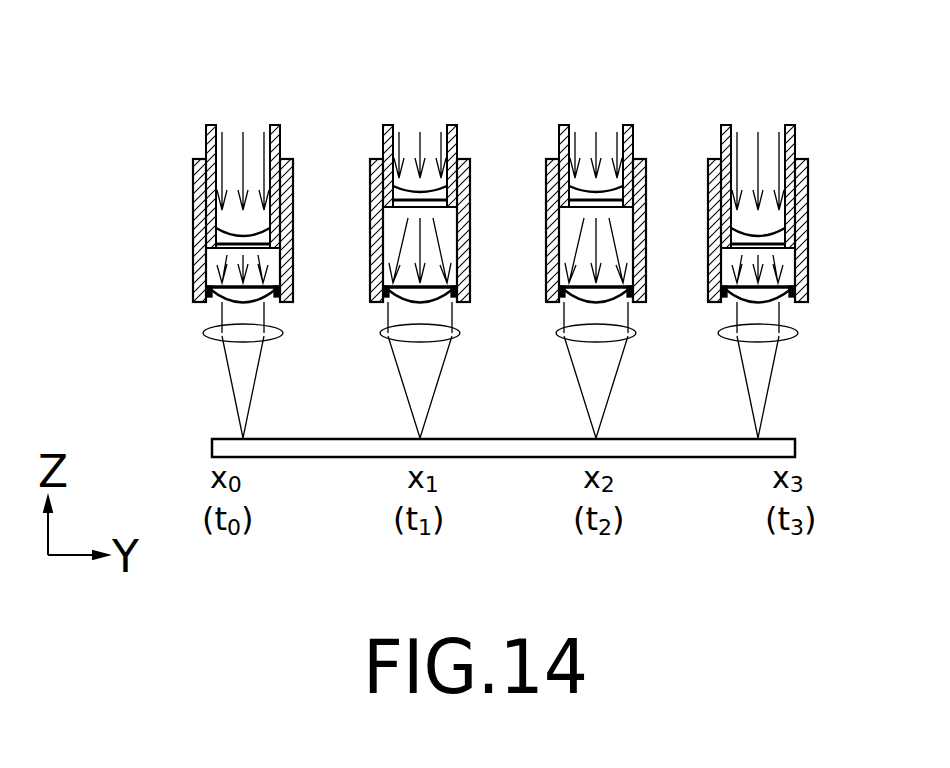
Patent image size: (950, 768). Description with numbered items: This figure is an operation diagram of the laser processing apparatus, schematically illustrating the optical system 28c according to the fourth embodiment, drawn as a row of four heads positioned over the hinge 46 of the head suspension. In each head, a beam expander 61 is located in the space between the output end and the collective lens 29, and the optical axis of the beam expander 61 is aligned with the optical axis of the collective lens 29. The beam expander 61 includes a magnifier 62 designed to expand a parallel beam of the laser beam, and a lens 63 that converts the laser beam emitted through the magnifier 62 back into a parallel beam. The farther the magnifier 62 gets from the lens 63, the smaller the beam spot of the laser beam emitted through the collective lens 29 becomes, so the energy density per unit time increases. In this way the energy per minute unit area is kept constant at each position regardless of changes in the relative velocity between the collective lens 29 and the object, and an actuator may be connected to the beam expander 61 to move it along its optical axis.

The optical system 28c is at (459, 176).
The beam expander 61 is at (193, 178).
The magnifier 62 is at (212, 235).
The lens 63 is at (203, 290).
The collective lens 29 is at (208, 335).
The hinge 46 is at (467, 423).